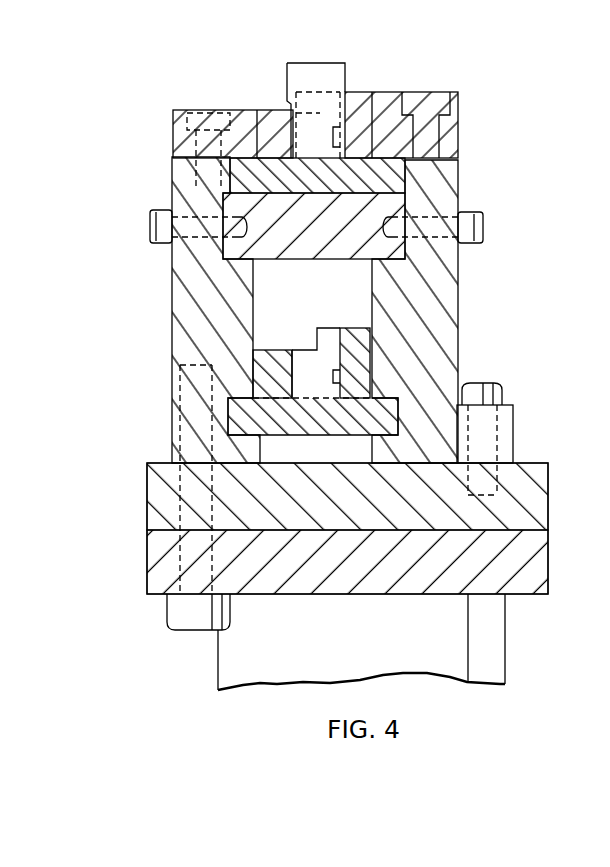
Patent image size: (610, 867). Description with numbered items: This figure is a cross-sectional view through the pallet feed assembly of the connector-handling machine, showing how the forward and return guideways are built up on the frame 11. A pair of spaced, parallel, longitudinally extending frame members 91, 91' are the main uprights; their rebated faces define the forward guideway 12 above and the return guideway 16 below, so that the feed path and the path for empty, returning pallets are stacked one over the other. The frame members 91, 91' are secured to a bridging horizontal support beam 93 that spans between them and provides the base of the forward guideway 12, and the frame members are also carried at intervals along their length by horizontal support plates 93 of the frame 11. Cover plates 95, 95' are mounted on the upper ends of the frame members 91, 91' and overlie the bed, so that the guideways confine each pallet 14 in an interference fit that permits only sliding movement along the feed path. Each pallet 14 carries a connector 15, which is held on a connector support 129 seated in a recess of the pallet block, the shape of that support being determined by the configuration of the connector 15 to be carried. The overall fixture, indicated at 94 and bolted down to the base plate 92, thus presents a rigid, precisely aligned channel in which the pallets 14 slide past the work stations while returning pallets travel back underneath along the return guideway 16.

The frame 11 is at (200, 647).
The guideway 12 is at (413, 183).
The pallet 14 is at (232, 180).
The connector 15 is at (328, 75).
The return guideway 16 is at (385, 422).
The frame member 91 is at (443, 311).
The frame member 91' is at (191, 310).
The base plate 92 is at (520, 523).
The horizontal support beam 93 is at (393, 203).
The fixture assembly 94 is at (138, 489).
The cover plate 95 is at (435, 125).
The cover plate 95' is at (206, 130).
The connector support 129 is at (380, 93).